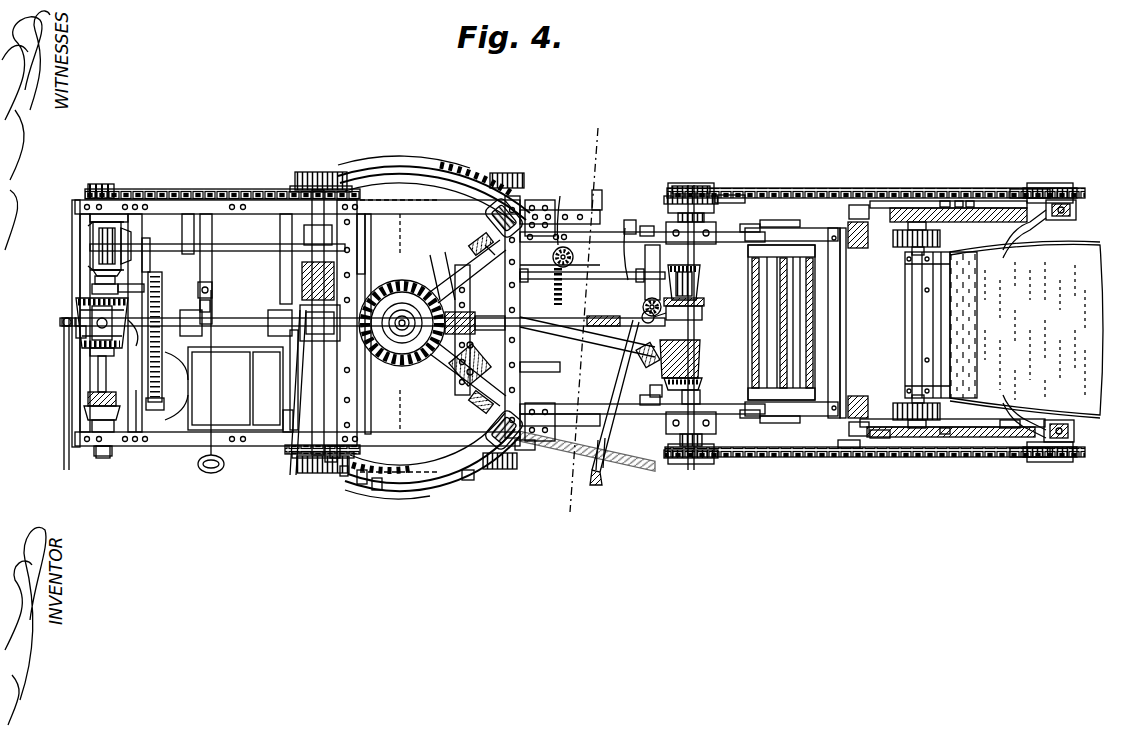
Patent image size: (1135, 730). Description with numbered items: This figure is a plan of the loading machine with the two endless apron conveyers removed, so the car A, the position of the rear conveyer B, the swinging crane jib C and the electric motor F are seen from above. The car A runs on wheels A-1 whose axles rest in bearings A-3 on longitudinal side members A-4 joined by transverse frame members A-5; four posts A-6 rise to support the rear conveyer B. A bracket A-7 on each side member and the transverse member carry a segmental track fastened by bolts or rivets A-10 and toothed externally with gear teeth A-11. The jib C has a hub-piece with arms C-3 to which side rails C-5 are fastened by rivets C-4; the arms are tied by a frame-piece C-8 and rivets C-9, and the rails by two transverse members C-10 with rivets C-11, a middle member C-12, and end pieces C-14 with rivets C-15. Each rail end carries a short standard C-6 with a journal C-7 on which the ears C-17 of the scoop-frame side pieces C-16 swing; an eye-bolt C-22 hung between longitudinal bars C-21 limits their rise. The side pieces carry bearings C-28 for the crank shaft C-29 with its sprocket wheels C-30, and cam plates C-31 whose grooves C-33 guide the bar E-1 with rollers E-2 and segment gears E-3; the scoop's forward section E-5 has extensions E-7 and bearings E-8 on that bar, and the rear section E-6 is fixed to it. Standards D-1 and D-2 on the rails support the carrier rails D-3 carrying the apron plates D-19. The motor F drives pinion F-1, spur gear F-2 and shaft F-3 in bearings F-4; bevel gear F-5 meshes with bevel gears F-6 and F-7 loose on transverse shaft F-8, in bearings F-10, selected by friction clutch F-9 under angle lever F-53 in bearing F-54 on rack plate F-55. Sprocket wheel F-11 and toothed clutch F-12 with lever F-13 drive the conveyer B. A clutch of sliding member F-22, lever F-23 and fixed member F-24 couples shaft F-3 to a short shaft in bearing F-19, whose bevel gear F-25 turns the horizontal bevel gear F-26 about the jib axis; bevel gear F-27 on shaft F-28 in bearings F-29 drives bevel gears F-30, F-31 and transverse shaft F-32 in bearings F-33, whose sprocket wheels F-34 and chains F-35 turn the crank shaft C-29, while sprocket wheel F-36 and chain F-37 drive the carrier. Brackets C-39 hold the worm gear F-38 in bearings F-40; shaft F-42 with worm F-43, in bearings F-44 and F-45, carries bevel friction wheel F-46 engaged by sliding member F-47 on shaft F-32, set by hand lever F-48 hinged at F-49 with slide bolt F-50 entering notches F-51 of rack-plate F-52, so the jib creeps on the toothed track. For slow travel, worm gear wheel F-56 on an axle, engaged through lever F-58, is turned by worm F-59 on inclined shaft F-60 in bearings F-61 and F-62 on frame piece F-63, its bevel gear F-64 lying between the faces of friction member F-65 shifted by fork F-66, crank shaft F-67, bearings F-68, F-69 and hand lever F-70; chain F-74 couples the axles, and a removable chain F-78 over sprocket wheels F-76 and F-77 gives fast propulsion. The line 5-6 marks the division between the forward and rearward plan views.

The car A is at (297, 306).
The wheels A-1 is at (306, 172).
The bearings A-3 is at (335, 462).
The longitudinal side members A-4 is at (247, 200).
The frame members A-5 is at (78, 223).
The posts A-6 is at (158, 200).
The bracket A-7 is at (440, 185).
The bolts or rivets A-10 is at (492, 175).
The gear teeth A-11 is at (560, 373).
The rear endless apron conveyer B is at (400, 333).
The horizontal swinging crane jib C is at (875, 305).
The arms C-3 is at (378, 488).
The bolts or rivets C-4 is at (462, 395).
The frame side rail C-5 is at (514, 462).
The short standard C-6 is at (866, 250).
The wrist or journal C-7 is at (858, 198).
The transverse horizontal frame-piece C-8 is at (468, 284).
The bolts or rivets C-9 is at (452, 252).
The horizontal transverse frame members C-10 is at (512, 314).
The bolts or rivets C-11 is at (526, 448).
The transverse frame member C-12 is at (665, 395).
The transverse frame pieces C-14 is at (842, 298).
The bolts or rivets C-15 is at (818, 450).
The side pieces C-16 is at (882, 200).
The upright ears C-17 is at (892, 446).
The longitudinal bars or frame pieces C-21 is at (632, 220).
The eye-bolt C-22 is at (648, 225).
The horizontal transverse bearing C-28 is at (1076, 212).
The crank shaft C-29 is at (1052, 238).
The sprocket wheel C-30 is at (1075, 172).
The cam plate C-31 is at (912, 200).
The cam groove C-33 is at (1000, 430).
The horizontal brackets C-39 is at (552, 200).
The upright standards D-1 is at (548, 213).
The standards D-2 is at (810, 227).
The carrier frame rail D-3 is at (768, 206).
The apron plates D-19 is at (781, 322).
The horizontal transverse bar E-1 is at (930, 331).
The antifriction roller E-2 is at (936, 200).
The segment gears E-3 is at (948, 200).
The forward section E-5 is at (1026, 329).
The rear section E-6 is at (948, 343).
The rearward extension E-7 is at (968, 200).
The bearing E-8 is at (960, 200).
The electric motor F is at (224, 388).
The motor pinion F-1 is at (152, 406).
The spur gear wheel F-2 is at (166, 337).
The shaft F-3 is at (238, 317).
The bearings F-4 is at (190, 318).
The bevel gear F-5 is at (135, 345).
The bevel gear F-6 is at (85, 350).
The bevel gear F-7 is at (82, 302).
The transverse shaft F-8 is at (98, 374).
The friction clutch F-9 is at (70, 317).
The bearings F-10 is at (88, 193).
The sprocket wheel F-11 is at (96, 456).
The toothed clutch F-12 is at (92, 402).
The hand lever F-13 is at (136, 440).
The bearing F-19 is at (366, 486).
The sliding clutch member F-22 is at (282, 446).
The hand lever F-23 is at (285, 440).
The fixed clutch member F-24 is at (292, 470).
The bevel gear wheel F-25 is at (355, 210).
The horizontal bevel gear wheel F-26 is at (372, 215).
The bevel gear wheel F-27 is at (392, 200).
The horizontal shaft F-28 is at (568, 353).
The bearings F-29 is at (470, 348).
The bevel gear wheel F-30 is at (696, 356).
The bevel gear wheel F-31 is at (702, 366).
The horizontal transverse shaft F-32 is at (702, 400).
The bearings F-33 is at (700, 424).
The sprocket wheel F-34 is at (698, 195).
The sprocket chain F-35 is at (826, 200).
The sprocket wheel F-36 is at (728, 212).
The endless sprocket chain F-37 is at (672, 198).
The worm gear F-38 is at (598, 190).
The bearings F-40 is at (566, 196).
The horizontal shaft F-42 is at (630, 220).
The worm F-43 is at (608, 200).
The bearing F-44 is at (548, 287).
The bearing F-45 is at (664, 233).
The bevel friction wheel F-46 is at (700, 266).
The sliding friction gear member F-47 is at (702, 296).
The hand lever F-48 is at (702, 313).
The hinge F-49 is at (646, 303).
The slide bolt F-50 is at (600, 480).
The notches F-51 is at (650, 400).
The rack-plate F-52 is at (655, 395).
The angle lever F-53 is at (66, 456).
The bearing F-54 is at (80, 332).
The rack plate F-55 is at (78, 430).
The worm gear wheel F-56 is at (300, 200).
The hand lever F-58 is at (340, 470).
The worm F-59 is at (292, 198).
The inclined shaft F-60 is at (200, 251).
The bearing F-61 is at (368, 246).
The bearing F-62 is at (143, 241).
The short transverse frame piece F-63 is at (143, 264).
The bevel gear F-64 is at (95, 245).
The gear member F-65 is at (95, 258).
The fork F-66 is at (90, 290).
The crank shaft F-67 is at (220, 302).
The bearing F-68 is at (88, 277).
The bearing F-69 is at (206, 290).
The reciprocatory hand lever F-70 is at (211, 474).
The sprocket chain F-74 is at (345, 476).
The sprocket wheel F-76 is at (285, 200).
The sprocket wheel F-77 is at (108, 188).
The sprocket chain F-78 is at (185, 200).
The line 5-6 is at (583, 326).